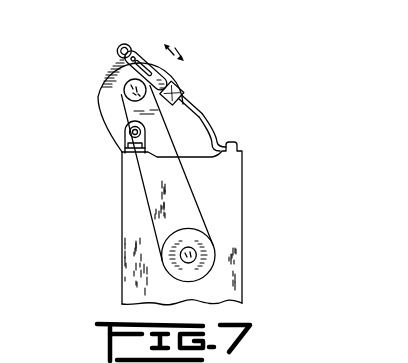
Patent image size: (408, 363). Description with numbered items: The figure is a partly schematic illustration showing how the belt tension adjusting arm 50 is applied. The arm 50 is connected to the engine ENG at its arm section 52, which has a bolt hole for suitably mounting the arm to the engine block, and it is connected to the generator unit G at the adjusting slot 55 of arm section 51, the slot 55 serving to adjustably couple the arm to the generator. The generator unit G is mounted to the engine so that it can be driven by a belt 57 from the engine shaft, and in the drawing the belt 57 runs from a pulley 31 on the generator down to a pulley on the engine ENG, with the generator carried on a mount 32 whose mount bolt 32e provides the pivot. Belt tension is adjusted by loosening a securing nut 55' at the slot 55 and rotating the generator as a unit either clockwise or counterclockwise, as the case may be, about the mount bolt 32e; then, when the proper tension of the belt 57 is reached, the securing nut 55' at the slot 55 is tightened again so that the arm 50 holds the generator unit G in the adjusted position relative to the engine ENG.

The idler pulley 31 is at (130, 92).
The mounting bracket 32 is at (110, 148).
The mount bolt 32e is at (131, 134).
The arm 50 is at (162, 84).
The arm section 51 is at (119, 47).
The arm section 52 is at (212, 126).
The slot 55 is at (130, 61).
The securing nut 55' is at (178, 42).
The belt 57 is at (193, 193).
The generator unit G is at (88, 72).
The engine ENG is at (247, 184).